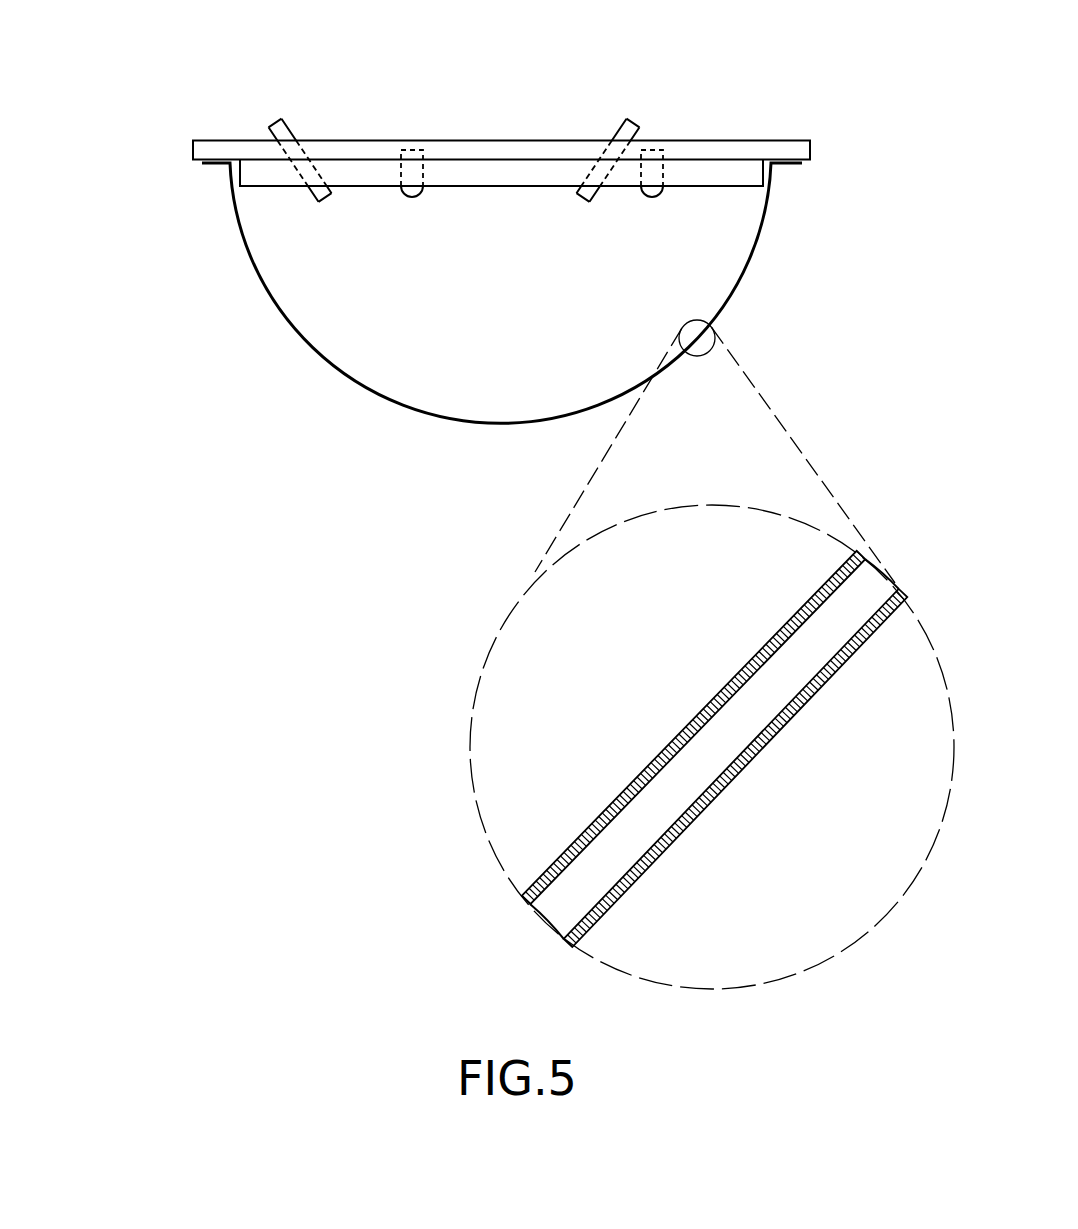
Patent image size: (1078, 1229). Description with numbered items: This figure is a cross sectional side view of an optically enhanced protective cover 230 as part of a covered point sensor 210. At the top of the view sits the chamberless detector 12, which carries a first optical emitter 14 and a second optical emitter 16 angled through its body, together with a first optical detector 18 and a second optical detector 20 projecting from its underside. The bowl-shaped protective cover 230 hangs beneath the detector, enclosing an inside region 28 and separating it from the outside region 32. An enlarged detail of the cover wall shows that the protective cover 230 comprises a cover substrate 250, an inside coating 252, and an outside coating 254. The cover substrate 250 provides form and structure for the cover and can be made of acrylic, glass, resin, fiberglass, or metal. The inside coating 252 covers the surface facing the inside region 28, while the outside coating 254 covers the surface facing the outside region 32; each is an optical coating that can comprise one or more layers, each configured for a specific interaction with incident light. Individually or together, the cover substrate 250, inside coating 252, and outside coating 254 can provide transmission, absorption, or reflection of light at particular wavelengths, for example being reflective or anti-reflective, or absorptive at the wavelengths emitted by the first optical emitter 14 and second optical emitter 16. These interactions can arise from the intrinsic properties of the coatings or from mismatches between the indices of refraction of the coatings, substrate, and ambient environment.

The covered point sensor 210 is at (121, 106).
The chamberless detector 12 is at (502, 140).
The first optical emitter 14 is at (292, 124).
The second optical emitter 16 is at (625, 121).
The first optical detector 18 is at (422, 198).
The second optical detector 20 is at (652, 199).
The inside region 28 is at (285, 250).
The protective cover 230 is at (267, 290).
The outside region 32 is at (245, 400).
The cover substrate 250 is at (557, 895).
The inside coating 252 is at (550, 865).
The outside coating 254 is at (628, 889).